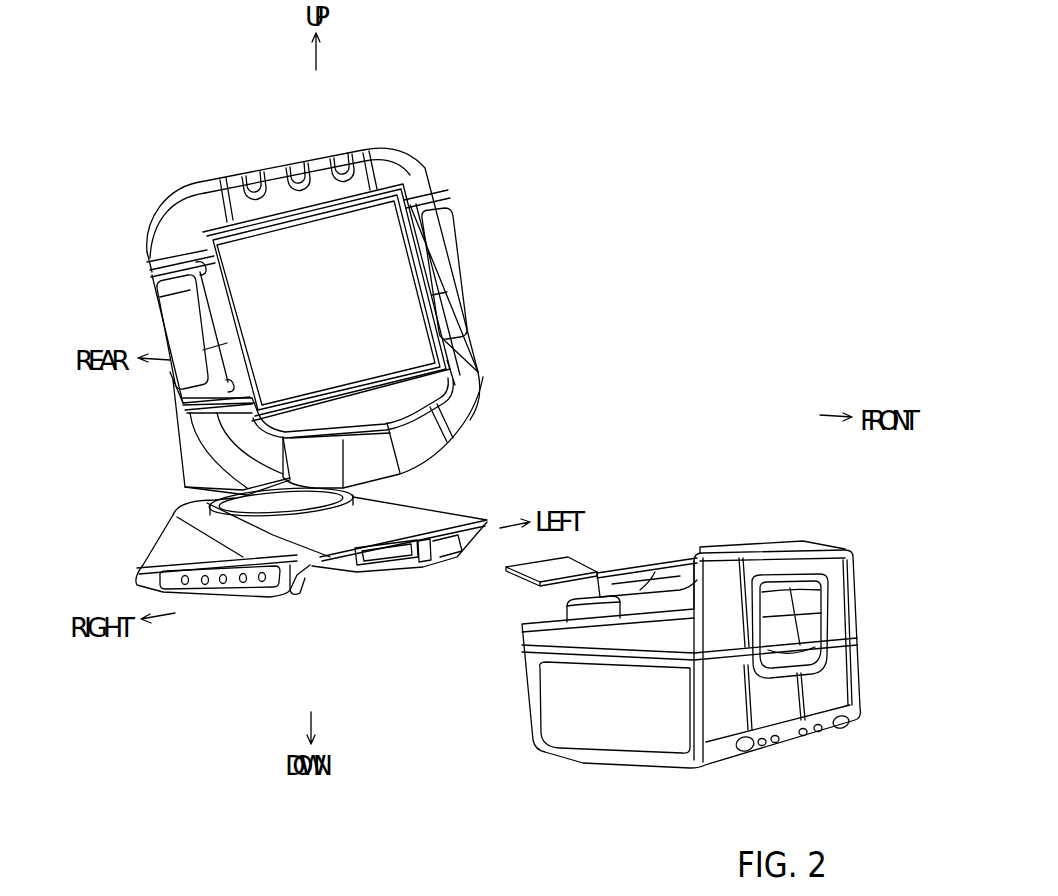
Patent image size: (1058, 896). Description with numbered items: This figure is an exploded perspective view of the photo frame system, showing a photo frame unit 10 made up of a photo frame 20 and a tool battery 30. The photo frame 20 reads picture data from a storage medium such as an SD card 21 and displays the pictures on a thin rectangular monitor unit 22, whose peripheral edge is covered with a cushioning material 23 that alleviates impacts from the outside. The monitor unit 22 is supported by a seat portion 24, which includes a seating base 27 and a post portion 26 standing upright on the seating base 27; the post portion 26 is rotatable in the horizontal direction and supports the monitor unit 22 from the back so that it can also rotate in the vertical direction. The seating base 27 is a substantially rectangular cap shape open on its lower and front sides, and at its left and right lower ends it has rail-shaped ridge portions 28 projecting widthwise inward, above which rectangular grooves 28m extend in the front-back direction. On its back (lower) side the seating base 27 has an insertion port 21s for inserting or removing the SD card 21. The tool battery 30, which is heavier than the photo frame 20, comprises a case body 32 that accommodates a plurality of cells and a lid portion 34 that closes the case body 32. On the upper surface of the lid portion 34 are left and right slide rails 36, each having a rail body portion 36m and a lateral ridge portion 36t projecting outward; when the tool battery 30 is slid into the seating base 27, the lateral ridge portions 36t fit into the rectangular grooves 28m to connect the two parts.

The photo frame unit 10 is at (630, 286).
The photo frame 20 is at (443, 141).
The SD card 21 is at (548, 562).
The insertion port 21s is at (396, 572).
The monitor unit 22 is at (380, 285).
The cushioning material 23 is at (162, 218).
The seat portion 24 is at (424, 494).
The post portion 26 is at (190, 462).
The seating base 27 is at (173, 545).
The ridge portions 28 is at (296, 592).
The rectangular grooves 28m is at (440, 552).
The tool battery 30 is at (761, 506).
The case body 32 is at (826, 702).
The lid portion 34 is at (826, 537).
The slide rails 36 is at (616, 572).
The rail body portions 36m is at (570, 618).
The lateral ridge portions 36t is at (645, 597).